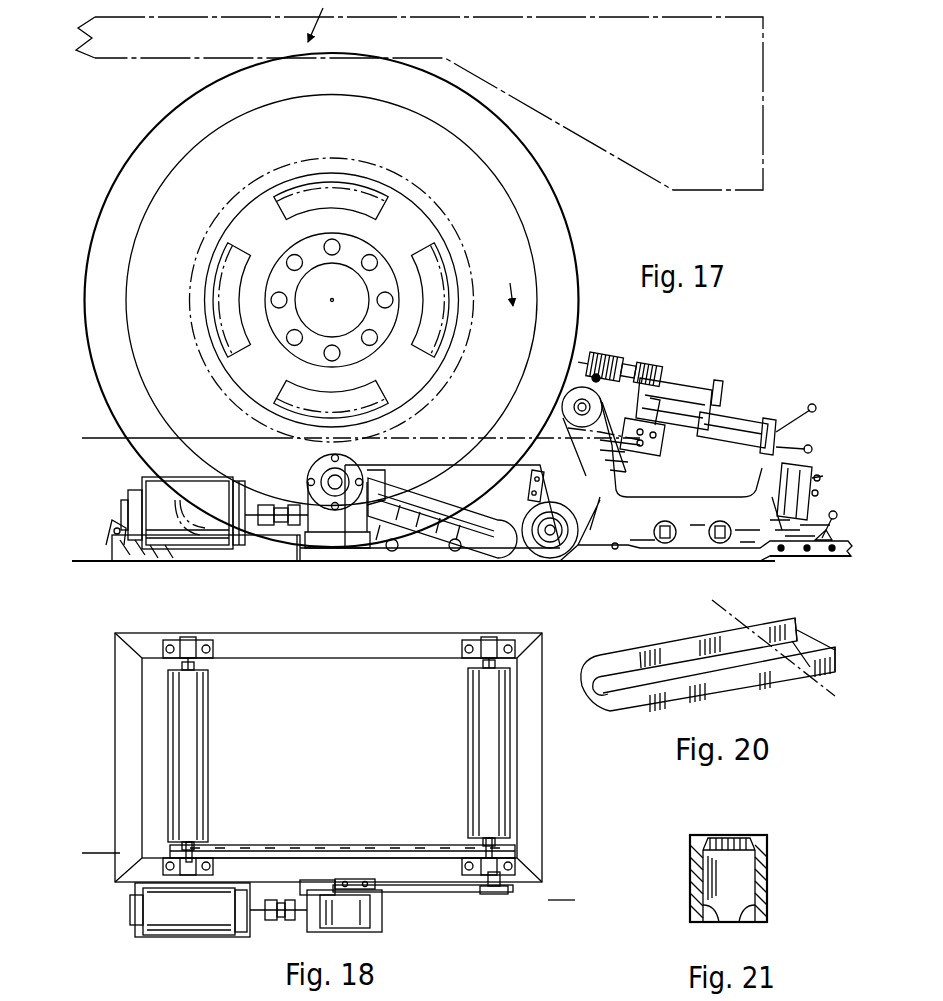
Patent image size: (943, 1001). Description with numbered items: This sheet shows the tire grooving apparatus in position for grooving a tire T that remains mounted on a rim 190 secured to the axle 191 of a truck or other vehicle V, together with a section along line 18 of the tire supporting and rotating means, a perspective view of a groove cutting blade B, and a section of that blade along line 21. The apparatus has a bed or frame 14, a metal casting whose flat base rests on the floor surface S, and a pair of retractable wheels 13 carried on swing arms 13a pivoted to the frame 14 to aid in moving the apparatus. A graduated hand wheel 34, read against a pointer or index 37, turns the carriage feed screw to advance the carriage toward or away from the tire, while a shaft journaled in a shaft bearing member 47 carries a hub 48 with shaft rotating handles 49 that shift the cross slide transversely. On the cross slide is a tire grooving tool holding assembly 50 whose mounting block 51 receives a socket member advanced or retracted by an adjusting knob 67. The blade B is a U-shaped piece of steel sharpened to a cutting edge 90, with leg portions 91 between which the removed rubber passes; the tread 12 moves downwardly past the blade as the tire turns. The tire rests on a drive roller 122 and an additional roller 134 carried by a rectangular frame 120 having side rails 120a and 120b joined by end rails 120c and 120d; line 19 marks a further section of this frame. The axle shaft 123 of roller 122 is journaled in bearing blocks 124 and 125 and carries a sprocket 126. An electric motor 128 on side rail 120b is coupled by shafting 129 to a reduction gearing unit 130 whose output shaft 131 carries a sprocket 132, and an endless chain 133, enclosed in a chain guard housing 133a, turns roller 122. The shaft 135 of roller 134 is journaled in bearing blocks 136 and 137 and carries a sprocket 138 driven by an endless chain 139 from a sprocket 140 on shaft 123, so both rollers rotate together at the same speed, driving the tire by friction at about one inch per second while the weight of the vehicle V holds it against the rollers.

In FIG. 17, the tread 12 is at (580, 264).
In FIG. 17, the retractable wheels 13 is at (583, 516).
In FIG. 21, the retractable wheels 13 is at (692, 861).
In FIG. 17, the swing arms 13a is at (537, 484).
In FIG. 17, the frame 14 is at (612, 550).
In FIG. 17, the section line 18— 18 is at (90, 438).
In FIG. 18, the section line 19— 19 is at (90, 872).
In FIG. 20, the section line 21— 21 is at (715, 606).
In FIG. 17, the graduated hand wheel 34 is at (809, 470).
In FIG. 17, the pointer or index 37 is at (794, 440).
In FIG. 17, the shaft bearing member 47 is at (734, 428).
In FIG. 17, the hub 48 is at (761, 431).
In FIG. 17, the shaft rotating handles 49 is at (802, 422).
In FIG. 17, the tire grooving tool holding assembly 50 is at (656, 362).
In FIG. 17, the mounting block 51 is at (685, 395).
In FIG. 17, the adjusting knob 67 is at (721, 387).
In FIG. 20, the cutting edge 90 is at (584, 670).
In FIG. 21, the cutting edge 90 is at (707, 838).
In FIG. 20, the leg portions 91 is at (795, 638).
In FIG. 21, the leg portions 91 is at (740, 906).
In FIG. 17, the rectangular frame 120 is at (271, 550).
In FIG. 18, the rectangular frame 120 is at (529, 773).
In FIG. 18, the side rail 120a is at (386, 629).
In FIG. 18, the side rail 120b is at (518, 886).
In FIG. 18, the end rail 120c is at (123, 731).
In FIG. 18, the end rail 120d is at (536, 719).
In FIG. 18, the drive roller 122 is at (483, 742).
In FIG. 18, the axle shaft 123 is at (479, 661).
In FIG. 18, the bearing block 124 is at (497, 641).
In FIG. 18, the bearing block 125 is at (466, 886).
In FIG. 18, the sprocket 126 is at (496, 893).
In FIG. 17, the electric motor 128 is at (207, 486).
In FIG. 18, the electric motor 128 is at (191, 929).
In FIG. 17, the shafting 129 is at (258, 510).
In FIG. 18, the shafting 129 is at (264, 919).
In FIG. 17, the reduction gearing unit 130 is at (320, 462).
In FIG. 18, the reduction gearing unit 130 is at (380, 921).
In FIG. 18, the output shaft 131 is at (341, 889).
In FIG. 18, the sprocket 132 is at (336, 886).
In FIG. 18, the endless chain 133 is at (456, 896).
In FIG. 17, the chain guard housing 133a is at (404, 484).
In FIG. 18, the additional roller 134 is at (208, 768).
In FIG. 18, the shaft 135 is at (199, 661).
In FIG. 18, the bearing block 136 is at (177, 648).
In FIG. 18, the bearing block 137 is at (181, 873).
In FIG. 18, the sprocket 138 is at (206, 844).
In FIG. 18, the endless chain 139 is at (279, 846).
In FIG. 18, the sprocket 140 is at (471, 839).
In FIG. 17, the rim 190 is at (440, 378).
In FIG. 17, the axle 191 is at (345, 268).
In FIG. 17, the blade B is at (591, 356).
In FIG. 20, the blade B is at (618, 651).
In FIG. 17, the floor surface S is at (86, 561).
In FIG. 17, the tire T is at (580, 250).
In FIG. 17, the vehicle V is at (606, 133).